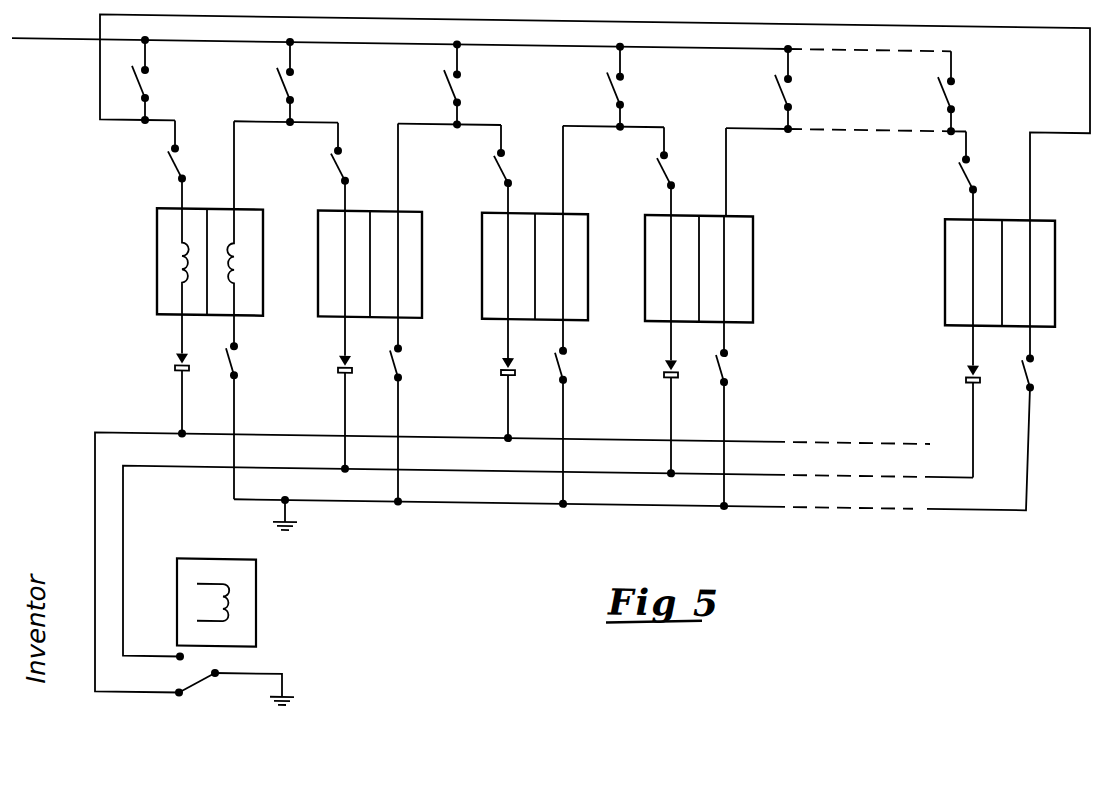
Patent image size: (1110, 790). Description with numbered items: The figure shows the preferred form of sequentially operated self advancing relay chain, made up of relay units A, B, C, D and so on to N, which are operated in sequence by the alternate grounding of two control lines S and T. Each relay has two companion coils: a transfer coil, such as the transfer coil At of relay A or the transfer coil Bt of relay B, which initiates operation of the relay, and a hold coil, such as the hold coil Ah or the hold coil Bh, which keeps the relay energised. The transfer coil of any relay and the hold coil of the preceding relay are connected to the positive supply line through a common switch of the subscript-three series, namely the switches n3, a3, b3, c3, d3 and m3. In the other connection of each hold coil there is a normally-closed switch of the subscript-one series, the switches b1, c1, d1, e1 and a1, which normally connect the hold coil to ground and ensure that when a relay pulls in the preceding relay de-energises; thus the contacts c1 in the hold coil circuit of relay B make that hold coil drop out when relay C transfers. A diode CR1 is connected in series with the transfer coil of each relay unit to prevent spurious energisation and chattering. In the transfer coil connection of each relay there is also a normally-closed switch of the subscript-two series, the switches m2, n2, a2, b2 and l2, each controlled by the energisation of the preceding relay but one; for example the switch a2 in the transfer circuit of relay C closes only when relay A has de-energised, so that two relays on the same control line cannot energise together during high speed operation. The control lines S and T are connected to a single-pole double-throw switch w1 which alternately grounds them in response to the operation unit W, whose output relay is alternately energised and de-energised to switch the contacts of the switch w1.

The switch n3 is at (152, 82).
The switch a3 is at (297, 84).
The switch b3 is at (465, 86).
The switch c3 is at (627, 88).
The switch d3 is at (797, 91).
The switch m3 is at (963, 93).
The switch m2 is at (157, 164).
The switch n2 is at (323, 166).
The switch a2 is at (488, 168).
The switch b2 is at (653, 171).
The switch l2 is at (957, 175).
The relay unit A is at (202, 247).
The transfer coil of relay A At is at (172, 268).
The hold coil of relay A Ah is at (247, 220).
The relay unit B is at (370, 245).
The transfer coil of relay B Bt is at (333, 273).
The hold coil of relay B Bh is at (415, 216).
The relay unit C is at (545, 267).
The relay unit D is at (711, 269).
The relay unit N is at (1011, 273).
The diode CR1 is at (558, 396).
The switch b1 is at (244, 407).
The switch c1 is at (407, 409).
The switch d1 is at (572, 412).
The switch e1 is at (735, 414).
The switch a1 is at (993, 418).
The control line S is at (134, 429).
The control line T is at (208, 467).
The operation unit W is at (240, 598).
The single-pole double-throw switch w1 is at (234, 674).